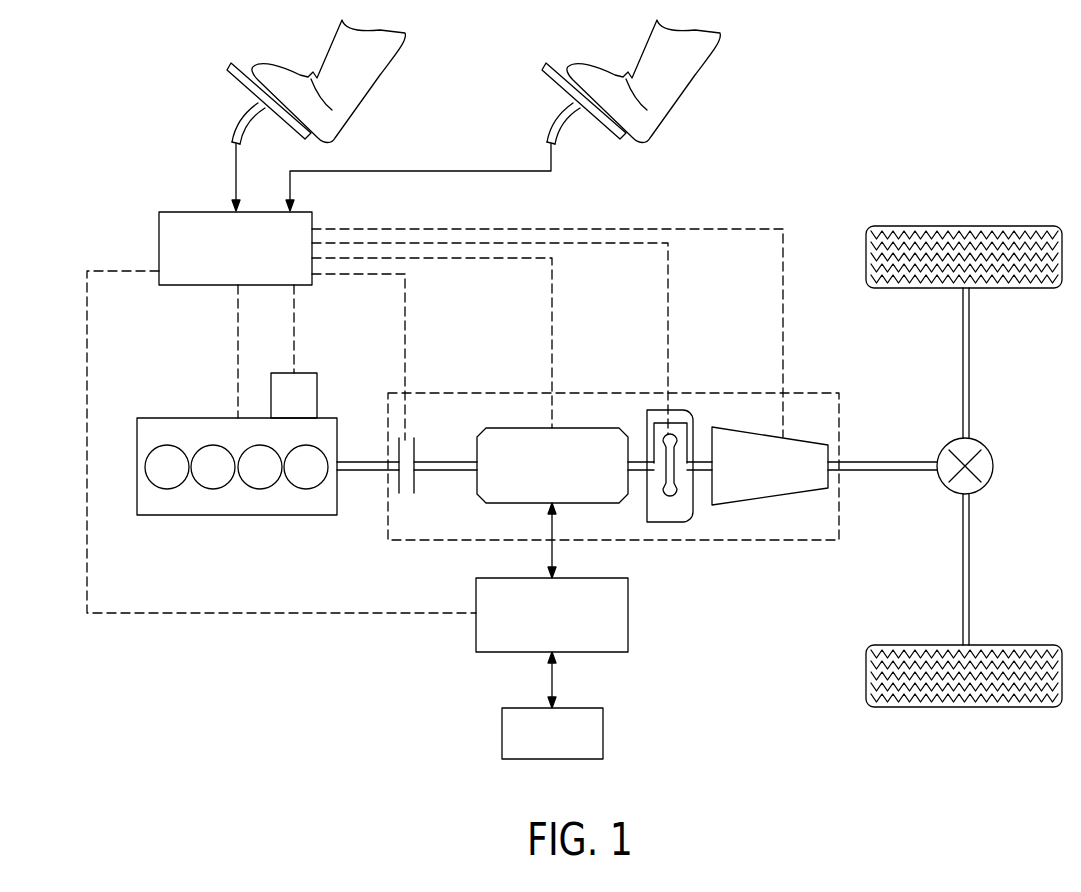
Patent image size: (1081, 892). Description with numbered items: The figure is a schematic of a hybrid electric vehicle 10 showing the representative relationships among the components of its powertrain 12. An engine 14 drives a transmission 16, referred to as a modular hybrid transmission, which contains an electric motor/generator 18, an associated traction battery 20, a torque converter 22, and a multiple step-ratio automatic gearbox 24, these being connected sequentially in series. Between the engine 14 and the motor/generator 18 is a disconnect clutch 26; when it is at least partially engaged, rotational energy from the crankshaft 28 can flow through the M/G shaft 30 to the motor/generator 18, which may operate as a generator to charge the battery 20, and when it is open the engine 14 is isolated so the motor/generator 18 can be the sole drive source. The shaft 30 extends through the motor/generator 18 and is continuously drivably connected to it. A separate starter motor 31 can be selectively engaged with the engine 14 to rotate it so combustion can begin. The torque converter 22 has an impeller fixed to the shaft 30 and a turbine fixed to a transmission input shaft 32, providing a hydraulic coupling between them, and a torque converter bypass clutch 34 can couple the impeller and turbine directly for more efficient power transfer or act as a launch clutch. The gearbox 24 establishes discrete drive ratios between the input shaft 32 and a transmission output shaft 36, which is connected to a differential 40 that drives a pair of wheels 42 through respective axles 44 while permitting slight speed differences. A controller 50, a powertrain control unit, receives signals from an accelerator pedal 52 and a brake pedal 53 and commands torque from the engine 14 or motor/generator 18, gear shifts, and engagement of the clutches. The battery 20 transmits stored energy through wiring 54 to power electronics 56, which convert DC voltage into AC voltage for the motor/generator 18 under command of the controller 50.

The hybrid electric vehicle 10 is at (845, 149).
The powertrain 12 is at (355, 634).
The engine 14 is at (195, 418).
The transmission 16 is at (589, 393).
The electric motor/generator 18 is at (528, 427).
The traction battery 20 is at (603, 731).
The torque converter 22 is at (663, 522).
The gearbox 24 is at (758, 504).
The disconnect clutch 26 is at (400, 493).
The crankshaft 28 is at (373, 460).
The M/G shaft 30 is at (452, 460).
The starter motor 31 is at (304, 372).
The transmission input shaft 32 is at (709, 461).
The torque converter bypass clutch 34 is at (671, 412).
The transmission output shaft 36 is at (887, 459).
The differential 40 is at (993, 465).
The wheels 42 is at (967, 225).
The axles 44 is at (970, 375).
The controller 50 is at (197, 210).
The accelerator pedal 52 is at (244, 86).
The brake pedal 53 is at (559, 86).
The wiring 54 is at (549, 668).
The power electronics 56 is at (628, 618).